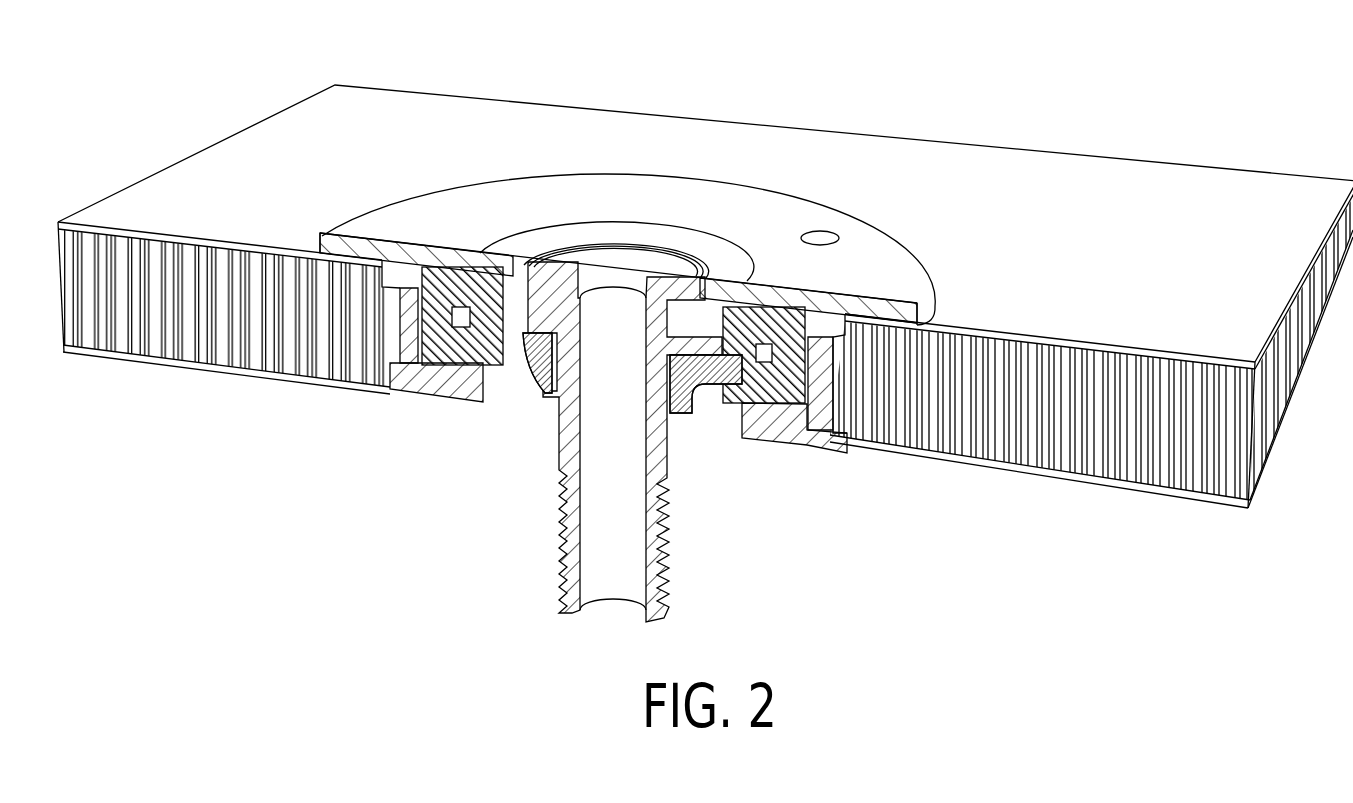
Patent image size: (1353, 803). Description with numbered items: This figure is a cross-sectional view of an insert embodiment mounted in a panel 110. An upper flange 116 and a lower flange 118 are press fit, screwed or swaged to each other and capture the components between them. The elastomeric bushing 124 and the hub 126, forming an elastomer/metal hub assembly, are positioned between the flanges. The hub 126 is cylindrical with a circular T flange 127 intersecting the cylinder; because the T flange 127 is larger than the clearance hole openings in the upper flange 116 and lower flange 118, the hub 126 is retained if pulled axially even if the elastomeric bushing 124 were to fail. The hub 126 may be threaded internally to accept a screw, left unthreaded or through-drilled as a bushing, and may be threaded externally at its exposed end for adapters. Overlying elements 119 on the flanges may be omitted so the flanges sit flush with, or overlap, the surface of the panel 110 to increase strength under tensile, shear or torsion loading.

The panel 110 is at (465, 113).
The upper flange 116 is at (398, 217).
The lower flange 118 is at (810, 440).
The overlying elements 119 is at (893, 310).
The elastomeric bushing 124 is at (790, 313).
The hub 126 is at (653, 438).
The T flange 127 is at (535, 367).